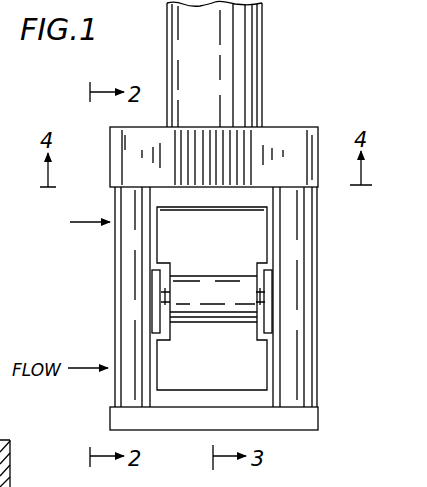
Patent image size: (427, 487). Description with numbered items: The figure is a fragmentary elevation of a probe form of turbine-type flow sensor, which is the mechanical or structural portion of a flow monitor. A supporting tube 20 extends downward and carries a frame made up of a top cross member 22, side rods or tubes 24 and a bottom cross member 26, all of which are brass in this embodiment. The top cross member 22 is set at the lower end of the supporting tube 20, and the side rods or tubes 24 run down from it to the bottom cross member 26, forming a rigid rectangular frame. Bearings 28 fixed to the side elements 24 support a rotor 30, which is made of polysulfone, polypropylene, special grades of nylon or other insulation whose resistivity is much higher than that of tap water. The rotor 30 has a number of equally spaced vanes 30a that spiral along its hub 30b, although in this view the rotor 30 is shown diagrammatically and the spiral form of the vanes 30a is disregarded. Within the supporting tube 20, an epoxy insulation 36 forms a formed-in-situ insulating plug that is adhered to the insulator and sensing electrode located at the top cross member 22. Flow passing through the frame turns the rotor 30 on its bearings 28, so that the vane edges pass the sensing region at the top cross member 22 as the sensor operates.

The supporting tube 20 is at (243, 33).
The top cross member 22 is at (304, 127).
The side rods or tubes 24 is at (126, 336).
The bottom cross member 26 is at (312, 418).
The bearings 28 is at (157, 284).
The rotor 30 is at (170, 233).
The vanes 30a is at (257, 232).
The hub 30b is at (210, 316).
The epoxy insulation 36 is at (12, 444).